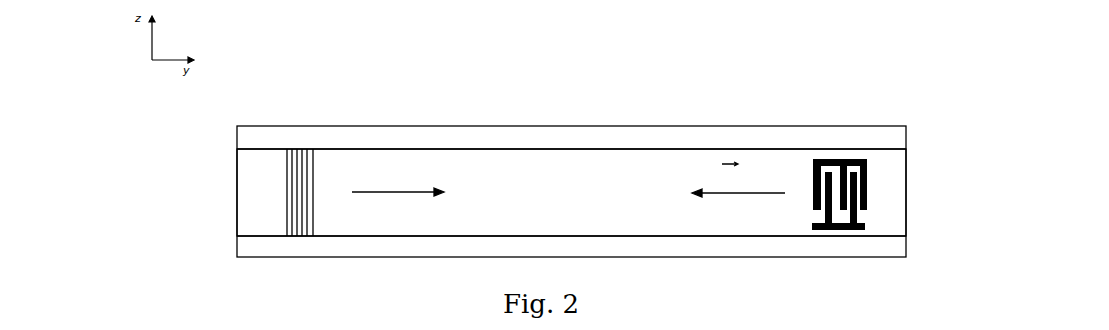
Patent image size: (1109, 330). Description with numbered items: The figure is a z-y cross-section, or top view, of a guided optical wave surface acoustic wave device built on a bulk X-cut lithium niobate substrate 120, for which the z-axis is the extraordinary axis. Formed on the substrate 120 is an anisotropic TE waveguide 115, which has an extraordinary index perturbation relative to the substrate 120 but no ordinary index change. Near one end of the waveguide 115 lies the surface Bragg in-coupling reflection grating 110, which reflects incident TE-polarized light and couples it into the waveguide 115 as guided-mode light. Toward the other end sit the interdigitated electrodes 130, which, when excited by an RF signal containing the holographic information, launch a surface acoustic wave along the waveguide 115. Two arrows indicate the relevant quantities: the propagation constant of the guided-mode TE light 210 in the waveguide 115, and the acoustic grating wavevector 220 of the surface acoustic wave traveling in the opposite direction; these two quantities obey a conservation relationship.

The Bragg in-coupling reflection grating 110 is at (296, 152).
The anisotropic waveguide 115 is at (256, 188).
The substrate 120 is at (263, 138).
The interdigitated electrodes 130 is at (848, 160).
The propagation constant of the guided-mode light 210 is at (395, 194).
The acoustic grating wavevector 220 is at (752, 195).